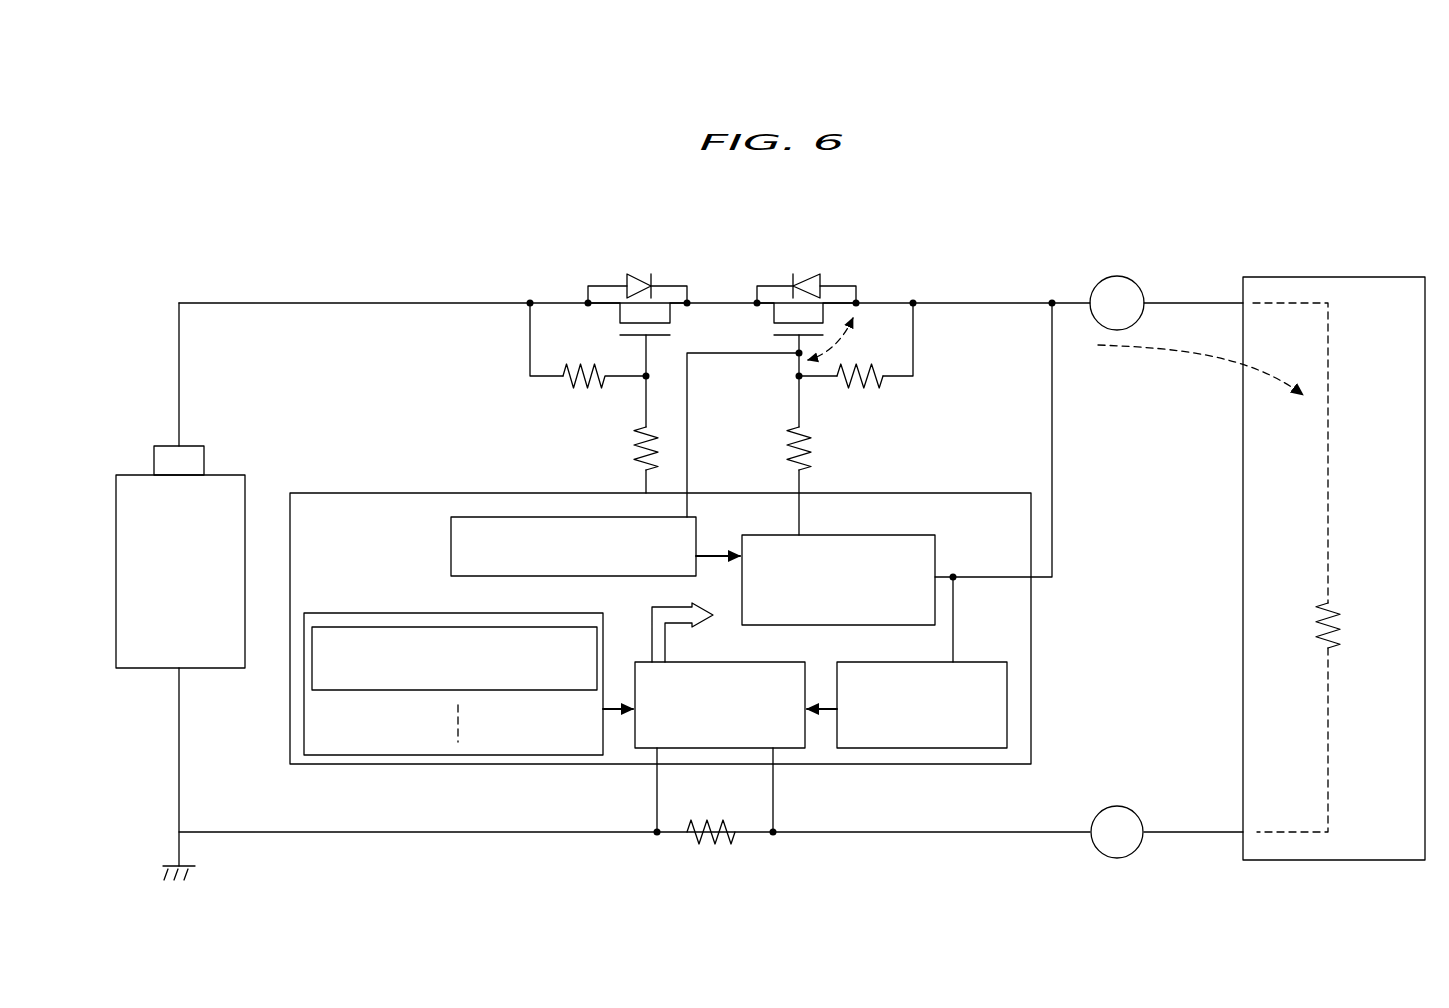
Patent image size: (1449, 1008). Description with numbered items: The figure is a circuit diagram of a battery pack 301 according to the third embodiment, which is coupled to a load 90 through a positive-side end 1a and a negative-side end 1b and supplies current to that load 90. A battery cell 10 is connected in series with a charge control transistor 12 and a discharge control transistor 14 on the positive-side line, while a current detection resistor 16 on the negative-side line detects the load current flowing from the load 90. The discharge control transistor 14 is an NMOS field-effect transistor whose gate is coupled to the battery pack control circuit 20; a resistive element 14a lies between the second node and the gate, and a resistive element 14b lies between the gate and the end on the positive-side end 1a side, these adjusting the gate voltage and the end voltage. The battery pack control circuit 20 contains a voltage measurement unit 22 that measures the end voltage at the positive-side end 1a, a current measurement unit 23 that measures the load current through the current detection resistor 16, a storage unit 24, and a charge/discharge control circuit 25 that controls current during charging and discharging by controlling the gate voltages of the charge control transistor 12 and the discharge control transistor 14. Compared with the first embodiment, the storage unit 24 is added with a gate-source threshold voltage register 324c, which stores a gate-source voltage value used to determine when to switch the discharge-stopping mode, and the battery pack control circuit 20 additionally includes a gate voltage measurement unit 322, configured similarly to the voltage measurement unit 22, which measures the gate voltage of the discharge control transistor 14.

The battery pack 301 is at (1015, 216).
The charge control transistor 12 is at (671, 260).
The discharge control transistor 14 is at (881, 260).
The resistive element 14a is at (771, 443).
The resistive element 14b is at (895, 386).
The battery cell 10 is at (132, 474).
The battery pack control circuit 20 is at (960, 494).
The gate voltage measurement unit 322 is at (451, 545).
The storage unit 24 is at (322, 613).
The gate-source threshold voltage register 324c is at (502, 690).
The charge/discharge control circuit 25 is at (867, 535).
The current measurement unit 23 is at (792, 748).
The voltage measurement unit 22 is at (1007, 700).
The current detection resistor 16 is at (727, 852).
The positive-side end 1a is at (1117, 276).
The negative-side end 1b is at (1120, 859).
The load 90 is at (1258, 860).